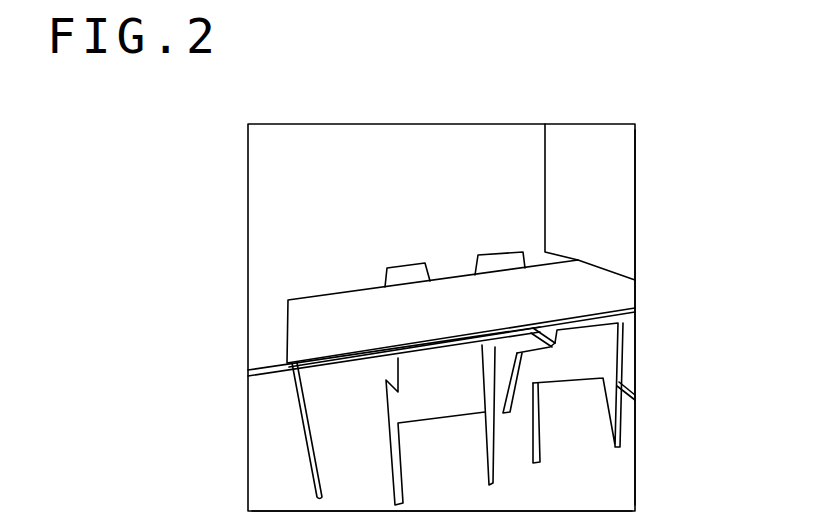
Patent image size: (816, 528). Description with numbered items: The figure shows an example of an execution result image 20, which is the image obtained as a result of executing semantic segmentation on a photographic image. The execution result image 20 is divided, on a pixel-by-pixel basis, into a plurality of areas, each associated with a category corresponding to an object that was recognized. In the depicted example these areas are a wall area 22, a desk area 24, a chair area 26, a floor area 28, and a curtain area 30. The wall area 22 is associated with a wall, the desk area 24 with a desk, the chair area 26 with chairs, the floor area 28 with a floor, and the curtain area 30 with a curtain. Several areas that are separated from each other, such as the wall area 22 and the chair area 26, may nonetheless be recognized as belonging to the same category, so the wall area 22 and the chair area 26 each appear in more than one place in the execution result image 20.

The execution result image 20 is at (552, 123).
The wall area 22 is at (260, 229).
The desk area 24 is at (297, 338).
The chair area 26 is at (481, 262).
The floor area 28 is at (627, 482).
The curtain area 30 is at (622, 212).